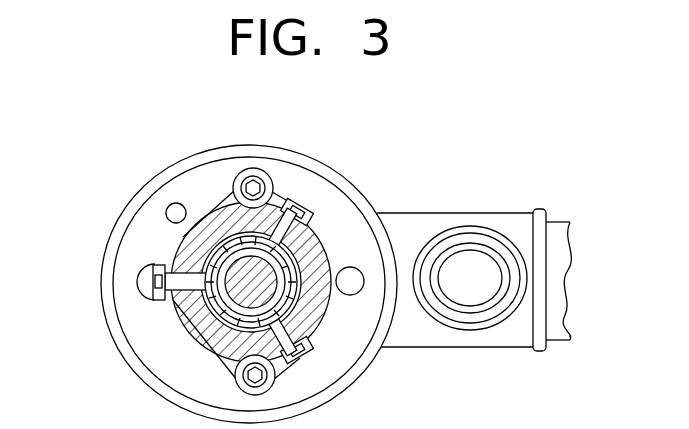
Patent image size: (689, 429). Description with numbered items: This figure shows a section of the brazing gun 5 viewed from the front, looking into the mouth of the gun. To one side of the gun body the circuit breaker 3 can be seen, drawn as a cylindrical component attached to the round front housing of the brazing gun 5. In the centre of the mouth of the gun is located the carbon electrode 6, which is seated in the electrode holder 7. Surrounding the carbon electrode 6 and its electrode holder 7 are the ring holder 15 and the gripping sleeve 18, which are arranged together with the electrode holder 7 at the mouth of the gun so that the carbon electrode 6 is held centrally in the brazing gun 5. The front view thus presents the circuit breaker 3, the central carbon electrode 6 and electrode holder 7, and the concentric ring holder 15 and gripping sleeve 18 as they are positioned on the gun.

The circuit breaker 3 is at (472, 258).
The brazing gun 5 is at (313, 166).
The carbon electrode 6 is at (182, 237).
The electrode holder 7 is at (207, 328).
The ring holder 15 is at (331, 320).
The gripping sleeve 18 is at (315, 240).